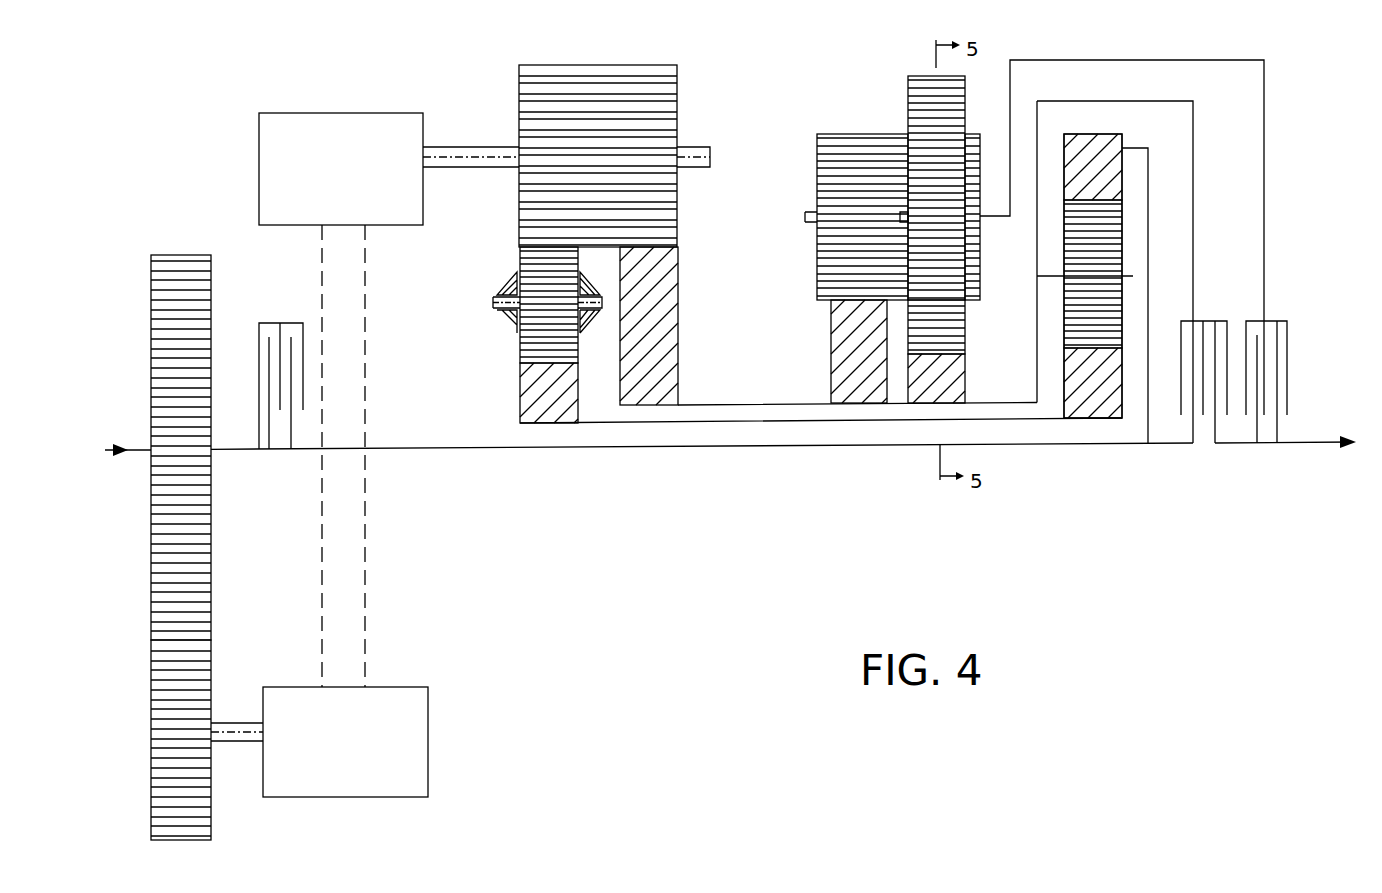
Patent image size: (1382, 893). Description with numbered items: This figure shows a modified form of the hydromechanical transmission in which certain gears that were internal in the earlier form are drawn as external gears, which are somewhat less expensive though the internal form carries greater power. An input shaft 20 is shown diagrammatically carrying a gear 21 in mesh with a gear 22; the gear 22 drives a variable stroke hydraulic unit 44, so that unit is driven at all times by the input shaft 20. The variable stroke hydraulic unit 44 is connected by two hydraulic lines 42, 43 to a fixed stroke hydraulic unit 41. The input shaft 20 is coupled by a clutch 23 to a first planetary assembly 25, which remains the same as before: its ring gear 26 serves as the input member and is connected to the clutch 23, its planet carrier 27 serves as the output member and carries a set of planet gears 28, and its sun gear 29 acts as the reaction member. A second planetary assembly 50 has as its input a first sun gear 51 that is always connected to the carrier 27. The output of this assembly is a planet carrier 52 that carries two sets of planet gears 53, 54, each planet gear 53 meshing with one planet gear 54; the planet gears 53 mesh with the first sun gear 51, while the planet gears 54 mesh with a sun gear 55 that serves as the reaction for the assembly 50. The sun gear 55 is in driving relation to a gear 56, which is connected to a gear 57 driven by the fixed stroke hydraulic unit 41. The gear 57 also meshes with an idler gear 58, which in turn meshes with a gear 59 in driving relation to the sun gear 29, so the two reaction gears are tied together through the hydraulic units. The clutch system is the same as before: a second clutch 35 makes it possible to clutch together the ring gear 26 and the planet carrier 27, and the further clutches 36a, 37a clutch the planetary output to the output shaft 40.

The input shaft 20 is at (106, 450).
The gear 21 is at (205, 543).
The gear 22 is at (207, 668).
The clutch 23 is at (280, 323).
The first planetary assembly 25 is at (1090, 130).
The ring gear 26 is at (1113, 150).
The planet carrier 27 is at (1047, 276).
The planet gears 28 is at (1122, 240).
The sun gear 29 is at (1069, 424).
The second clutch 35 is at (1190, 318).
The third clutch 36a is at (1275, 322).
The fourth clutch 37a is at (1210, 322).
The output shaft 40 is at (1312, 442).
The fixed stroke hydraulic unit 41 is at (259, 183).
The hydraulic line 42 is at (322, 560).
The hydraulic line 43 is at (368, 544).
The variable stroke hydraulic unit 44 is at (428, 693).
The second planetary assembly 50 is at (905, 72).
The first sun gear 51 is at (950, 373).
The planet carrier 52 is at (1015, 214).
The planet gears 53 is at (965, 315).
The planet gears 54 is at (891, 134).
The sun gear 55 is at (831, 356).
The gear 56 is at (673, 360).
The gear 57 is at (672, 98).
The idler gear 58 is at (520, 352).
The gear 59 is at (526, 401).